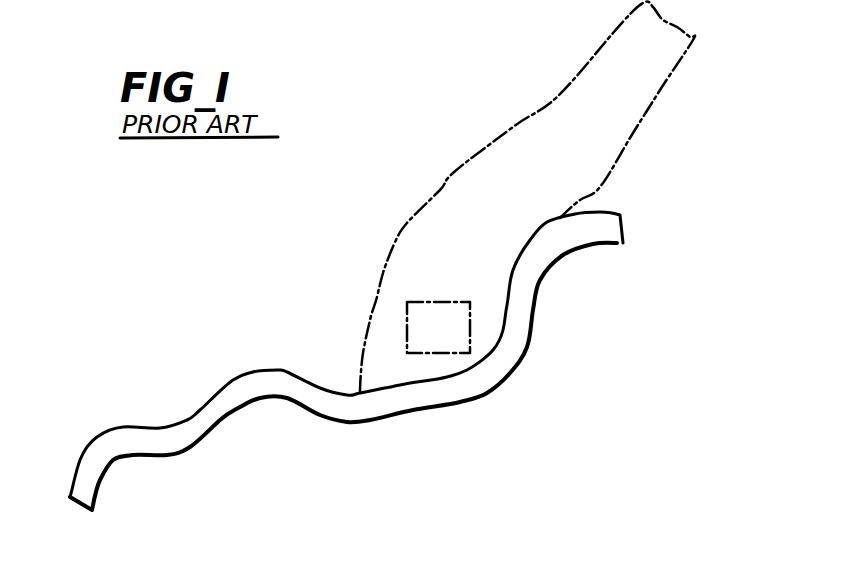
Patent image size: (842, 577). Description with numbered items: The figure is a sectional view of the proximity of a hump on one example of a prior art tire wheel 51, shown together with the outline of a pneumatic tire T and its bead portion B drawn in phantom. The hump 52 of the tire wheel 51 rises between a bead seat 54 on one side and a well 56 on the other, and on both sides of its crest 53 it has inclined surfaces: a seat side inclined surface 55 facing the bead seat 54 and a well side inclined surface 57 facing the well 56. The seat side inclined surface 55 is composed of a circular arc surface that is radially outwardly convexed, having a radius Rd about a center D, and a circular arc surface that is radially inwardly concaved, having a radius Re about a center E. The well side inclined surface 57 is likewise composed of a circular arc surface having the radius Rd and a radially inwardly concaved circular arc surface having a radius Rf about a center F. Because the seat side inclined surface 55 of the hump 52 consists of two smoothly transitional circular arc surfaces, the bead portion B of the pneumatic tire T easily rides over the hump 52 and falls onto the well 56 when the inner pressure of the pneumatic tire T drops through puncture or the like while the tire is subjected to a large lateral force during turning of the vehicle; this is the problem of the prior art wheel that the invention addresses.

The tire wheel 51 is at (507, 397).
The hump 52 is at (233, 370).
The crest 53 is at (270, 371).
The bead seat 54 is at (400, 389).
The seat side inclined surface 55 is at (310, 368).
The well 56 is at (70, 498).
The well side inclined surface 57 is at (210, 404).
The pneumatic tire T is at (541, 126).
The bead portion B is at (381, 324).
The center E is at (351, 343).
The center F is at (192, 413).
The center D is at (283, 374).
The radius Re is at (352, 360).
The radius Rd is at (255, 429).
The radius Rf is at (156, 409).